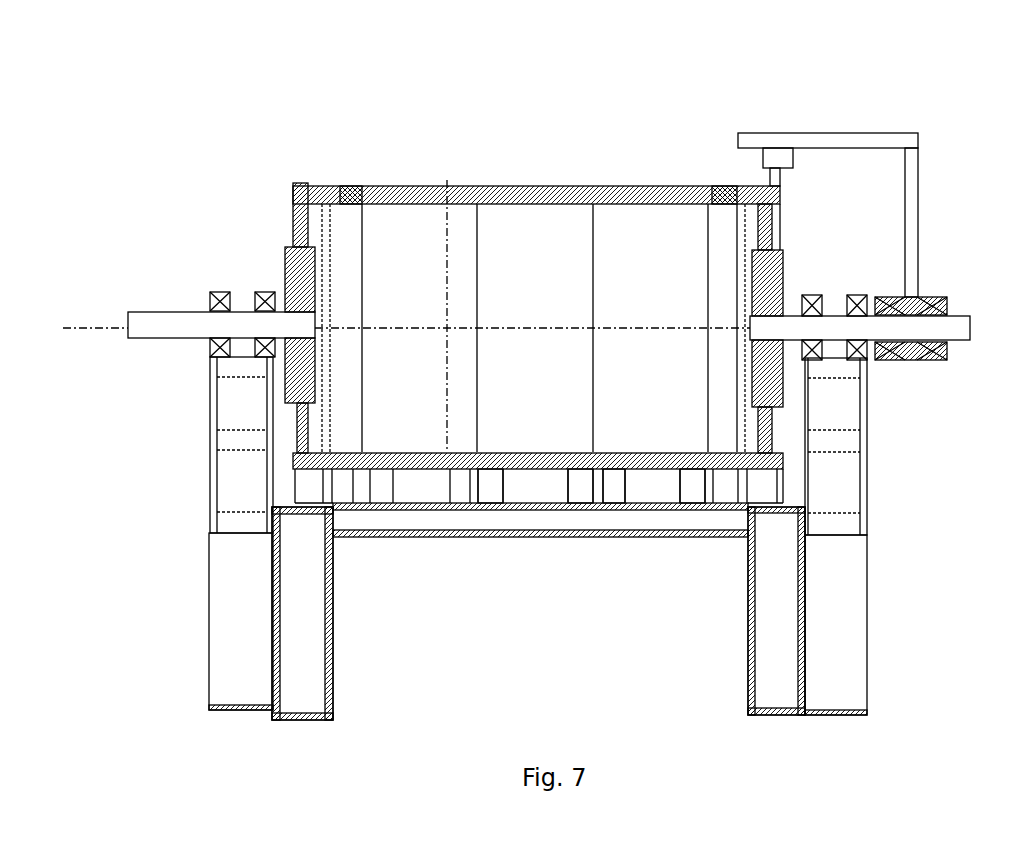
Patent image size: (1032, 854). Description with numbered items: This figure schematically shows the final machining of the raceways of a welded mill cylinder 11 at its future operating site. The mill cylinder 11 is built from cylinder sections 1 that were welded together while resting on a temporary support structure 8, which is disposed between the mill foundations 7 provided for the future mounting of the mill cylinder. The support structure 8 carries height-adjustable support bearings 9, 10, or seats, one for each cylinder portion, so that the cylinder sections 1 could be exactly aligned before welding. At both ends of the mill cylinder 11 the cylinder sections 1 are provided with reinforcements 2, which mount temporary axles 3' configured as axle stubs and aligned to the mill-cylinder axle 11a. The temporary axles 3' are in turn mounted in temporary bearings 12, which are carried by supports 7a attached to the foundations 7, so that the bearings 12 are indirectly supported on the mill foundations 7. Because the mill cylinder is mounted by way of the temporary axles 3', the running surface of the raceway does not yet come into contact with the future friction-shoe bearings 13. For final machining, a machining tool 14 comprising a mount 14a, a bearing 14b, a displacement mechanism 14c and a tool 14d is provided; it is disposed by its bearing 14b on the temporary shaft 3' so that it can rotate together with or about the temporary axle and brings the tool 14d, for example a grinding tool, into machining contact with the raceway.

The cylinder section 1 is at (500, 190).
The reinforcement 2 is at (290, 225).
The temporary axle 3' is at (576, 306).
The mill foundation 7 is at (315, 655).
The support 7a is at (210, 612).
The temporary support structure 8 is at (425, 520).
The support bearing 9 is at (492, 490).
The support bearing 10 is at (580, 497).
The mill cylinder 11 is at (563, 154).
The mill-cylinder axle 11a is at (521, 328).
The temporary bearing 12 is at (228, 437).
The friction-shoe bearing 13 is at (305, 483).
The machining tool 14 is at (871, 226).
The mount 14a is at (912, 192).
The bearing 14b is at (935, 300).
The displacement mechanism 14c is at (780, 155).
The tool 14d is at (778, 175).